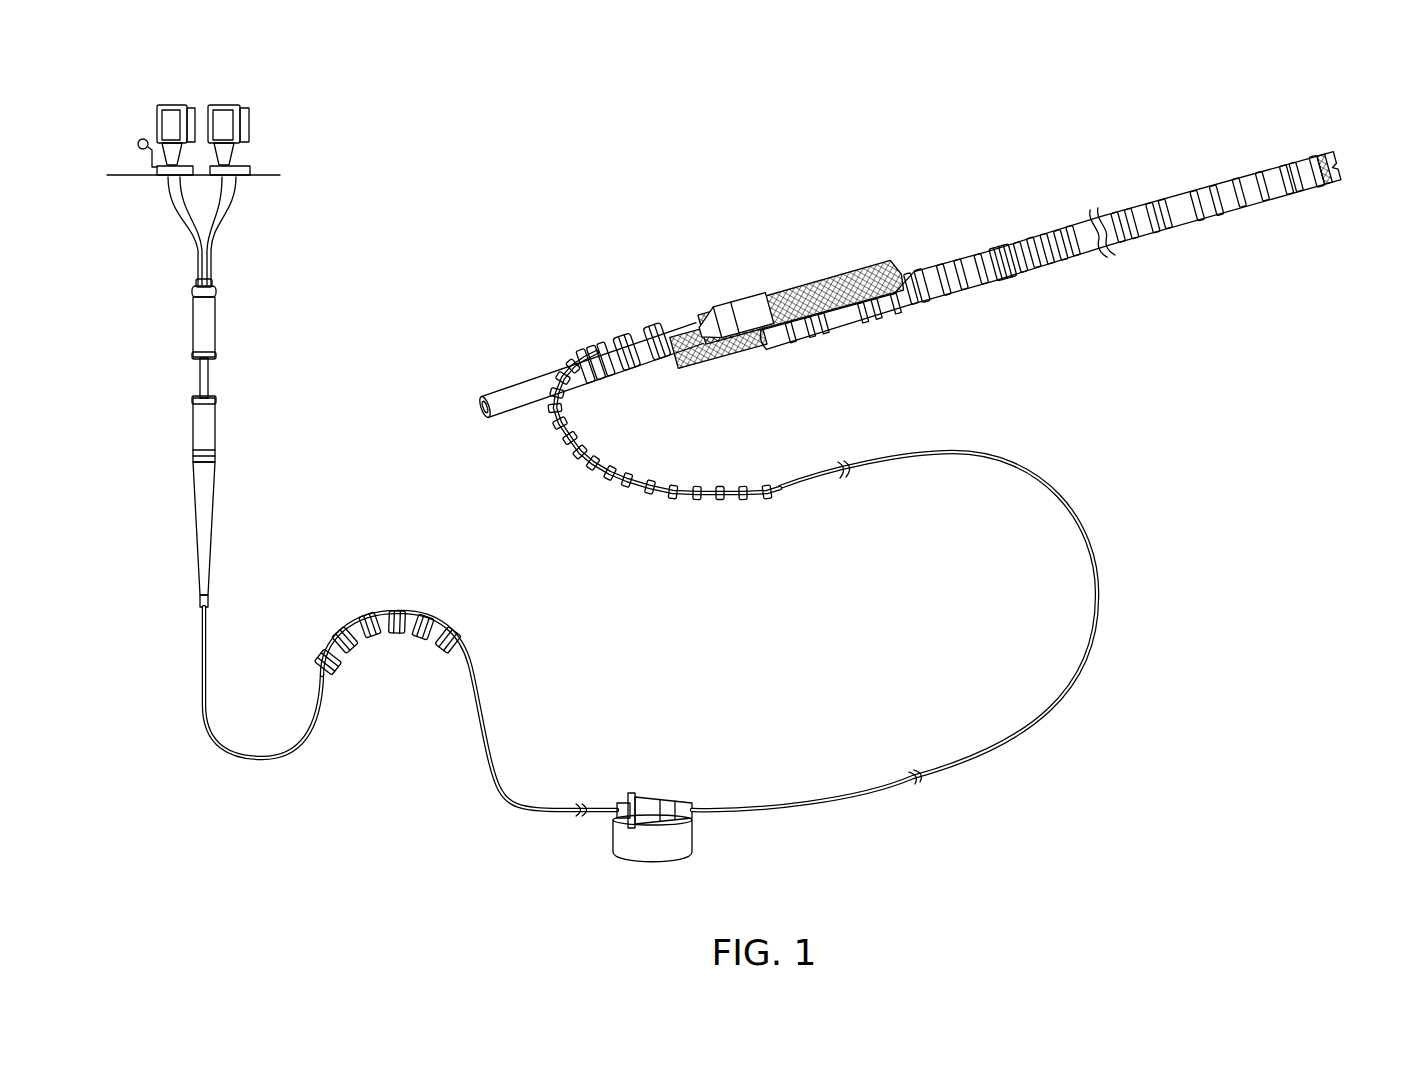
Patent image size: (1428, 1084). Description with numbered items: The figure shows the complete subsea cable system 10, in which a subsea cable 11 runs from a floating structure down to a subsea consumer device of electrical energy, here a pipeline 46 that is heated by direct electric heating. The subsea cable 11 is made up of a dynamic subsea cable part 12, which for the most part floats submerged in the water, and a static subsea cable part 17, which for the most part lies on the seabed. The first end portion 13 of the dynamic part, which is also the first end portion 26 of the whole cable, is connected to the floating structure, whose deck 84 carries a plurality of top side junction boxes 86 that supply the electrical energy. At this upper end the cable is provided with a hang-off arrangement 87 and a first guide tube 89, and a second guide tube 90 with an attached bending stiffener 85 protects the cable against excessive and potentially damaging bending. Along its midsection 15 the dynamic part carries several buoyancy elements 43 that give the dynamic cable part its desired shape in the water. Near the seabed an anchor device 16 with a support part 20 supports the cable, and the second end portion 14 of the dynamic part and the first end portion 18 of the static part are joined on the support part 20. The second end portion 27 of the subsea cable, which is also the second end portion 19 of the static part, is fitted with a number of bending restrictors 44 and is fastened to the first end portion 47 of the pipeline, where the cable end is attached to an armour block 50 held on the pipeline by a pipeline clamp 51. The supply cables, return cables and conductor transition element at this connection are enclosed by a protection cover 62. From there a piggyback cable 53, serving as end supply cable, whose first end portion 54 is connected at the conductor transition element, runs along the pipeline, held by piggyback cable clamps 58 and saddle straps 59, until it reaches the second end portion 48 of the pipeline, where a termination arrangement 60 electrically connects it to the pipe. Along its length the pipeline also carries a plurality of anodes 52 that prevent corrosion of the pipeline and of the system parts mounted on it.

The subsea cable system 10 is at (395, 235).
The subsea cable 11 is at (815, 760).
The dynamic subsea cable part 12 is at (203, 727).
The first end portion of dynamic subsea cable part 13 is at (198, 381).
The second end portion of dynamic subsea cable part 14 is at (604, 807).
The midsection 15 is at (320, 693).
The anchor device 16 is at (671, 874).
The static subsea cable part 17 is at (1097, 637).
The first end portion of static subsea cable part 18 is at (708, 808).
The second end portion of static subsea cable part 19 is at (617, 340).
The support part 20 is at (694, 845).
The first end portion of subsea cable 26 is at (199, 325).
The second end portion of subsea cable 27 is at (537, 422).
The buoyancy element 43 is at (320, 656).
The bending restrictor 44 is at (550, 430).
The pipeline 46 is at (1011, 262).
The first end portion of pipeline 47 is at (485, 397).
The second end portion of pipeline 48 is at (1333, 167).
The armour block 50 is at (645, 335).
The pipeline clamp 51 is at (655, 378).
The anode 52 is at (1043, 252).
The piggyback cable 53 is at (1165, 214).
The first end portion of piggyback cable 54 is at (1120, 228).
The piggyback cable clamp 58 is at (1003, 262).
The saddle strap 59 is at (1101, 233).
The termination arrangement 60 is at (1324, 169).
The protection cover 62 is at (743, 305).
The deck 84 is at (132, 177).
The bending stiffener 85 is at (194, 498).
The top side junction box 86 is at (184, 123).
The hang-off arrangement 87 is at (215, 288).
The first guide tube 89 is at (217, 305).
The second guide tube 90 is at (215, 444).